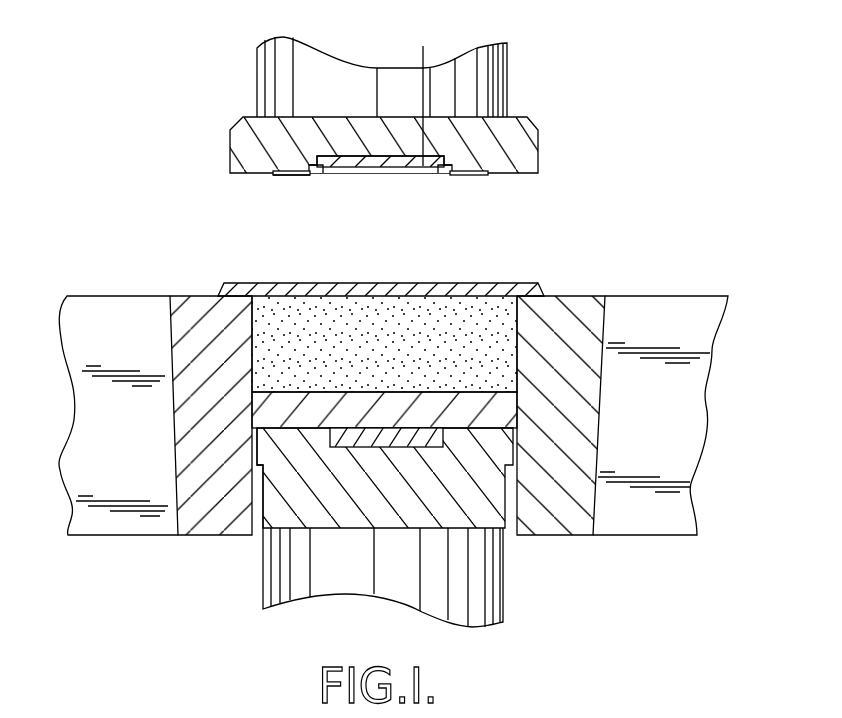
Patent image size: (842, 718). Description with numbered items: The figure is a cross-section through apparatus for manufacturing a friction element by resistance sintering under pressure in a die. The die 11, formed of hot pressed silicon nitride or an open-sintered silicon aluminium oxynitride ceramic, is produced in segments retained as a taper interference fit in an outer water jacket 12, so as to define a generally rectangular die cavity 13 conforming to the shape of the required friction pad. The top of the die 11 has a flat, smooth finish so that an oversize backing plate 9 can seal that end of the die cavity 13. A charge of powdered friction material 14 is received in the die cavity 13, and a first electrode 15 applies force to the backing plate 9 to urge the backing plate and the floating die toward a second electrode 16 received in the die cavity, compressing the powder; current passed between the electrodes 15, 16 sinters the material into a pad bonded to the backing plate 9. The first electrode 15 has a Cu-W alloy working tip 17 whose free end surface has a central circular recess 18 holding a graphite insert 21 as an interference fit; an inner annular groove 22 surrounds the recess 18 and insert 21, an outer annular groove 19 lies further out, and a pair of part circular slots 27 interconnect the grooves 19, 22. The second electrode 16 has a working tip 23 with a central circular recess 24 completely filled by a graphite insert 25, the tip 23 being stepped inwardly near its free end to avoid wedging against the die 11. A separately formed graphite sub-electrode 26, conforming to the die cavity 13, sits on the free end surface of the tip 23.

The backing plate 9 is at (218, 287).
The die 11 is at (567, 312).
The outer water jacket 12 is at (647, 295).
The die cavity 13 is at (258, 307).
The powdered friction material 14 is at (487, 342).
The first electrode 15 is at (287, 82).
The second electrode 16 is at (252, 547).
The working tip 17 is at (257, 144).
The circular recess 18 is at (429, 94).
The outer annular groove 19 is at (275, 176).
The graphite insert 21 is at (413, 167).
The inner annular groove 22 is at (320, 173).
The working tip 23 is at (480, 453).
The circular recess 24 is at (482, 508).
The graphite insert 25 is at (367, 440).
The sub-electrode 26 is at (350, 410).
The part circular slots 27 is at (302, 175).